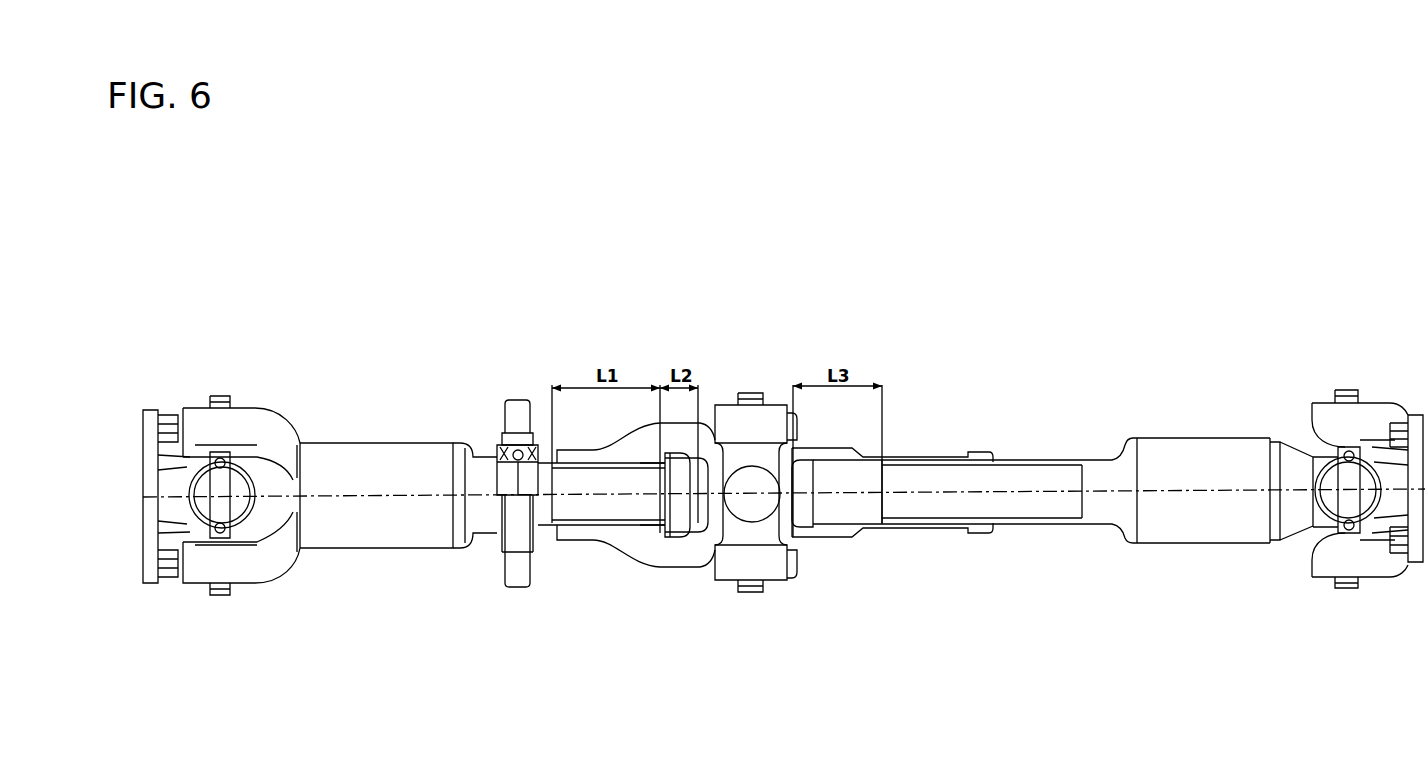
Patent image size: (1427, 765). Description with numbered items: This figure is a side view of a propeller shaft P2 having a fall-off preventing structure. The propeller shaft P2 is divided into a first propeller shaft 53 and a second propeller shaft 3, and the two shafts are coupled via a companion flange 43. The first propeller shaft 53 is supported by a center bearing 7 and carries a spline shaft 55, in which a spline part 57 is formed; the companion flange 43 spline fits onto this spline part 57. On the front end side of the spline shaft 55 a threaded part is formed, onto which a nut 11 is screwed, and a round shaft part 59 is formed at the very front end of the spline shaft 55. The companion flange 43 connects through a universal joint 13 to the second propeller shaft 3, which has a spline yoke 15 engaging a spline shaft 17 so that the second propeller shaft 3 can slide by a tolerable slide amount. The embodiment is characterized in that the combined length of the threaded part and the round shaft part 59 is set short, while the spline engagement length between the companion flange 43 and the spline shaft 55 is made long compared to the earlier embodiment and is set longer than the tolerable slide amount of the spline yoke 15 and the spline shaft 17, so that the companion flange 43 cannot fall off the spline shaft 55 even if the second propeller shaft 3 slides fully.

The propeller shaft P2 is at (437, 378).
The second propeller shaft 3 is at (1172, 455).
The center bearing 7 is at (518, 575).
The nut 11 is at (683, 520).
The universal joint 13 is at (755, 425).
The spline yoke of second propeller shaft 15 is at (950, 457).
The spline shaft of second propeller shaft 17 is at (1025, 477).
The companion flange 43 is at (623, 542).
The first propeller shaft 53 is at (360, 470).
The spline shaft of the first propeller shaft 55 is at (577, 517).
The spline part 57 is at (655, 535).
The round shaft part 59 is at (697, 507).